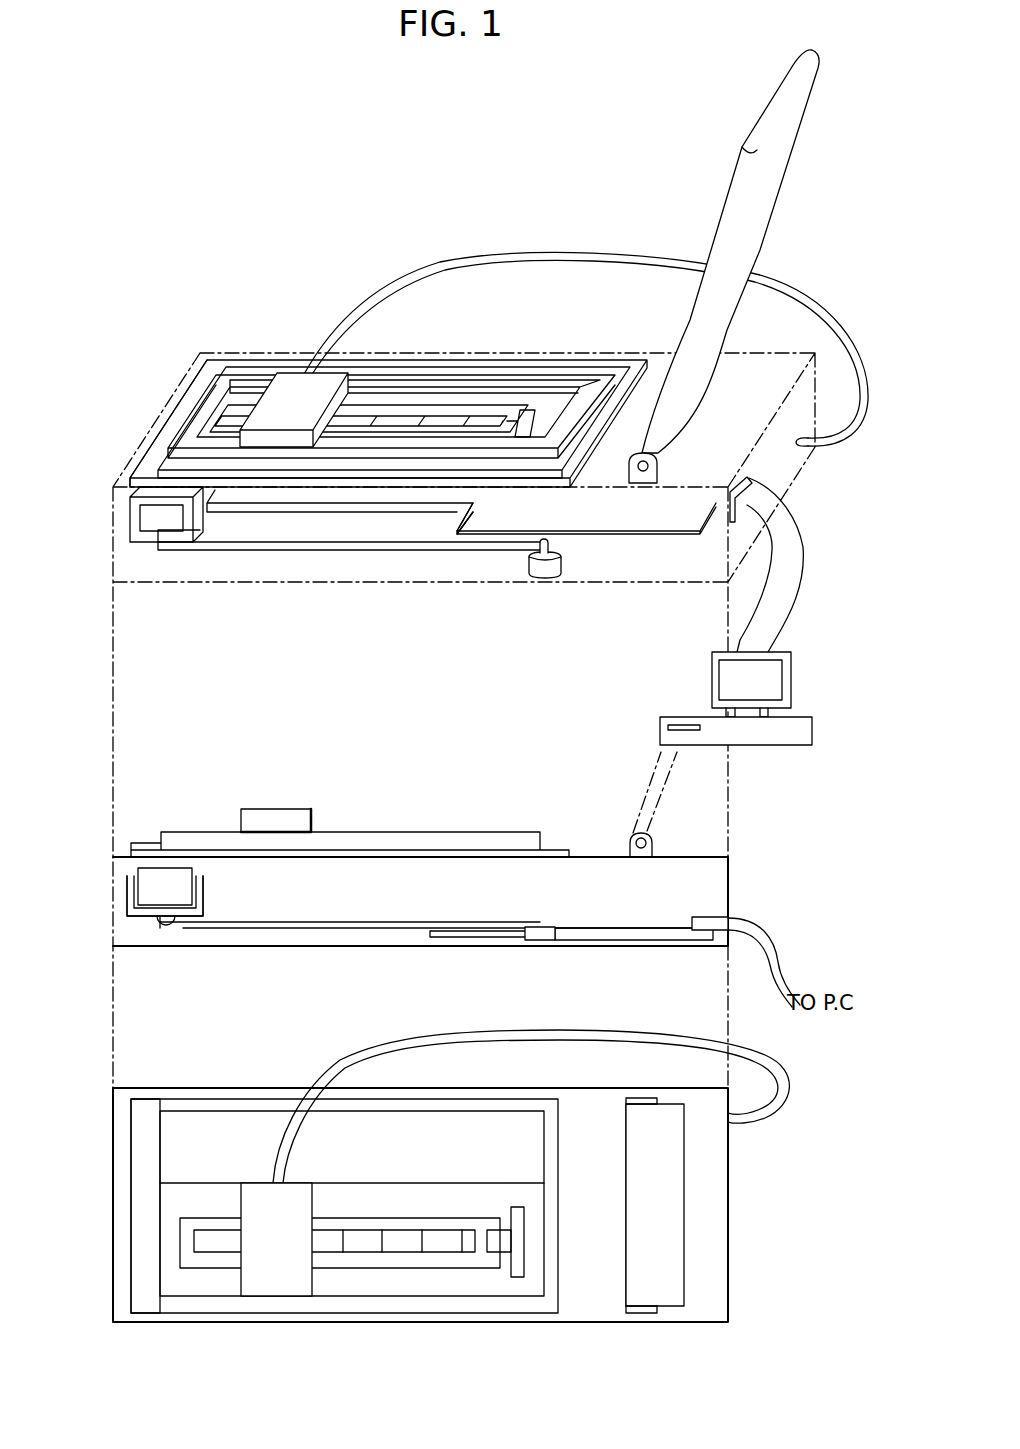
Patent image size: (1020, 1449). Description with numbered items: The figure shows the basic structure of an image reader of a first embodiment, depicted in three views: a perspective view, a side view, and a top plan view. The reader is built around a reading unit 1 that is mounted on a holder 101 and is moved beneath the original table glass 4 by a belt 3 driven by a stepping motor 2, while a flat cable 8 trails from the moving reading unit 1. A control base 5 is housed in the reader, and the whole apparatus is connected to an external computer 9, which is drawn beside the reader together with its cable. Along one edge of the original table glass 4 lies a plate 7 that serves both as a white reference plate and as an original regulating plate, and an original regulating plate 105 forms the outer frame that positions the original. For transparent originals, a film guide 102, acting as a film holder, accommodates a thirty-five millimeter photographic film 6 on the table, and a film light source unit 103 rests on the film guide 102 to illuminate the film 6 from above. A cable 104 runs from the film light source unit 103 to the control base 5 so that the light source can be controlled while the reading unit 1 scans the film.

The reading unit 1 is at (145, 520).
The stepping motor 2 is at (547, 570).
The belt 3 is at (333, 548).
The original table glass 4 is at (560, 385).
The control base 5 is at (490, 515).
The 35-mm photographic film 6 is at (222, 1240).
The plate 7 is at (128, 482).
The flat cable 8 is at (270, 512).
The external computer 9 is at (785, 745).
The holder 101 is at (130, 905).
The film guide 102 is at (483, 400).
The film light source unit 103 is at (303, 372).
The cable 104 is at (540, 252).
The original regulating plate 105 is at (622, 372).